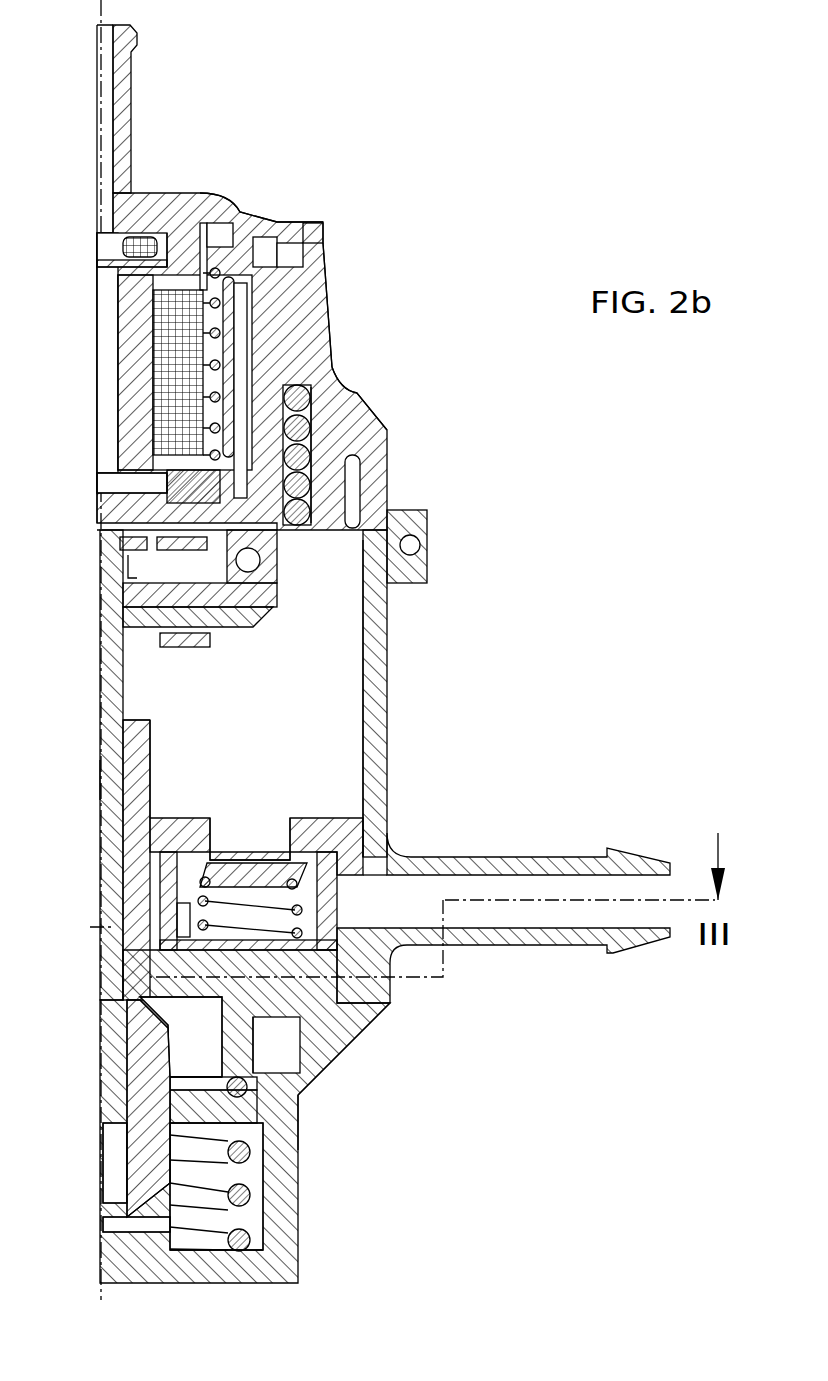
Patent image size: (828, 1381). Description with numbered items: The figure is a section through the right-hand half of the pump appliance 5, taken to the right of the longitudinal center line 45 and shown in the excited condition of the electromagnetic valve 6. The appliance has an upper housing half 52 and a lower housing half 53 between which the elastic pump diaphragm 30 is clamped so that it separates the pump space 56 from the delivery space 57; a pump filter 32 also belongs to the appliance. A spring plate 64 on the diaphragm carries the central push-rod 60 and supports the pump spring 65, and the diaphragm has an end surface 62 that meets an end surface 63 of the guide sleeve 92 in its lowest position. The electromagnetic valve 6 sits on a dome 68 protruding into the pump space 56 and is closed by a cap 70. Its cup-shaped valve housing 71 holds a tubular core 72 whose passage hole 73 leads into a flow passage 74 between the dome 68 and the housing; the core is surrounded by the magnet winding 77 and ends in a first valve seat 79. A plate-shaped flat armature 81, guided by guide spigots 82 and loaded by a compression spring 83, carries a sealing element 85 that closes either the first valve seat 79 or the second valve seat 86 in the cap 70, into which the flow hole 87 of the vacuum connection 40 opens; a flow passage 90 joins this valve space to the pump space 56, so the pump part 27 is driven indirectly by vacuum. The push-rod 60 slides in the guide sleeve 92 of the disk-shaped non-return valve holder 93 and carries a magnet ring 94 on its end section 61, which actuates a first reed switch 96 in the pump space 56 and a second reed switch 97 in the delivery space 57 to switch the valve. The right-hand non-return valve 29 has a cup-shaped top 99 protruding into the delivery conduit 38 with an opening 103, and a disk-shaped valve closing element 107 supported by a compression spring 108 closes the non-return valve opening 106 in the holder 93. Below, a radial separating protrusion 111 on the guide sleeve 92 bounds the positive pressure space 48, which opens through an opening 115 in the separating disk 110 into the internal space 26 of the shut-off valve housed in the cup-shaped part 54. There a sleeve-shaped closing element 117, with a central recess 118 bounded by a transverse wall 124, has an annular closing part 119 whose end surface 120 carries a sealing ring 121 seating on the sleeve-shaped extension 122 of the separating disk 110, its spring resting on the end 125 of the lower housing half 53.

The pump appliance 5 is at (552, 125).
The electromagnetic valve 6 is at (216, 172).
The internal space 26 is at (207, 1072).
The pump part 27 is at (320, 598).
The non-return valve 29 is at (275, 913).
The pump diaphragm 30 is at (365, 495).
The pump filter 32 is at (165, 493).
The delivery conduit 38 is at (555, 878).
The vacuum connection 40 is at (140, 46).
The longitudinal center line 45 is at (105, 6).
The positive pressure space 48 is at (275, 980).
The upper housing half 52 is at (386, 455).
The lower housing half 53 is at (387, 697).
The cup-shaped part 54 is at (285, 1235).
The pump space 56 is at (105, 530).
The delivery space 57 is at (252, 753).
The push-rod 60 is at (115, 662).
The end section 61 is at (105, 553).
The end surface 62 is at (232, 632).
The end surface 63 is at (135, 718).
The spring plate 64 is at (302, 440).
The pump spring 65 is at (373, 423).
The dome 68 is at (313, 397).
The cap 70 is at (240, 225).
The valve housing 71 is at (303, 320).
The core 72 is at (130, 375).
The passage hole 73 is at (293, 275).
The flow passage 74 is at (100, 470).
The magnet winding 77 is at (160, 412).
The first valve seat 79 is at (172, 222).
The flat armature 81 is at (300, 225).
The guide spigots 82 is at (235, 232).
The compression spring 83 is at (220, 308).
The sealing element 85 is at (135, 236).
The second valve seat 86 is at (120, 230).
The flow hole 87 is at (108, 78).
The flow passage 90 is at (293, 363).
The guide sleeve 92 is at (140, 748).
The non-return valve holder 93 is at (333, 820).
The magnet ring 94 is at (163, 562).
The first reed switch 96 is at (262, 615).
The second reed switch 97 is at (200, 647).
The right-hand top 99 is at (413, 948).
The opening 103 is at (370, 1020).
The non-return valve opening 106 is at (255, 838).
The valve closing element 107 is at (225, 862).
The compression spring 108 is at (353, 870).
The separating disk 110 is at (350, 1060).
The radial separating protrusion 111 is at (120, 773).
The opening 115 is at (193, 990).
The closing element 117 is at (142, 1177).
The central recess 118 is at (118, 1215).
The annular closing part 119 is at (270, 1185).
The end surface 120 is at (270, 1150).
The sealing ring 121 is at (270, 1115).
The sleeve-shaped extension 122 is at (250, 1085).
The transverse wall 124 is at (115, 1195).
The end 125 is at (190, 1250).